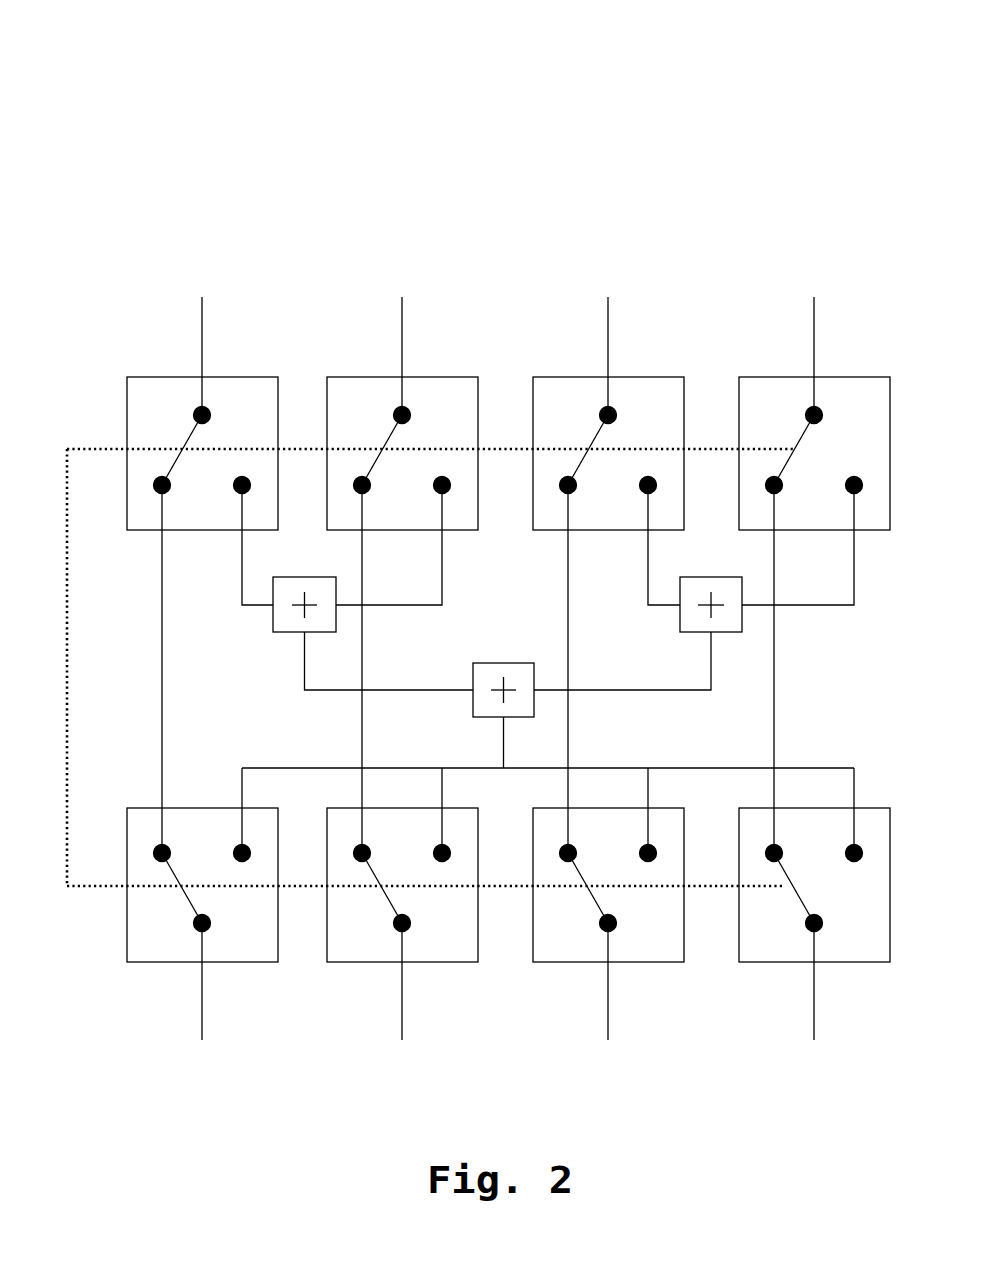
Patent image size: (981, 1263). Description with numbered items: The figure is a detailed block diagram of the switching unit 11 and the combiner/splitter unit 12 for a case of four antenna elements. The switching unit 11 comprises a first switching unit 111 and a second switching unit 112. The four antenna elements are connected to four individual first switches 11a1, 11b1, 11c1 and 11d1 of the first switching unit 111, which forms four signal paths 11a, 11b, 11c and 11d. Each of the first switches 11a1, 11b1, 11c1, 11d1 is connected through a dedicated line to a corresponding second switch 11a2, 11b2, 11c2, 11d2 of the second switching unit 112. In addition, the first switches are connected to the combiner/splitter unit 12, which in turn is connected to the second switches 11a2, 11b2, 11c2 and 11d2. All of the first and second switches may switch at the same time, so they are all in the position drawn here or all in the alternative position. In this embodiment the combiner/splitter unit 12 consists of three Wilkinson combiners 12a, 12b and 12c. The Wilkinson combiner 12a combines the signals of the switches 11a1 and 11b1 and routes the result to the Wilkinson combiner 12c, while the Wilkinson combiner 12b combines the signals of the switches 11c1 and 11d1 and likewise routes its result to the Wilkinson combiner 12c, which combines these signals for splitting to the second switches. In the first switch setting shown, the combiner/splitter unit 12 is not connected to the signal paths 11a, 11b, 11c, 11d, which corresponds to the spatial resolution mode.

The switching unit 11 is at (789, 118).
The signal path 11a is at (233, 263).
The signal path 11b is at (432, 263).
The signal path 11c is at (638, 263).
The signal path 11d is at (845, 263).
The first switch 11a1 is at (252, 375).
The first switch 11b1 is at (452, 375).
The first switch 11c1 is at (654, 375).
The first switch 11d1 is at (869, 375).
The second switch 11a2 is at (242, 962).
The second switch 11b2 is at (442, 962).
The second switch 11c2 is at (655, 962).
The second switch 11d2 is at (862, 962).
The first switching unit 111 is at (110, 393).
The second switching unit 112 is at (110, 924).
The combiner/splitter unit 12 is at (827, 679).
The Wilkinson combiner 12a is at (287, 632).
The Wilkinson combiner 12b is at (679, 622).
The Wilkinson combiner 12c is at (503, 663).